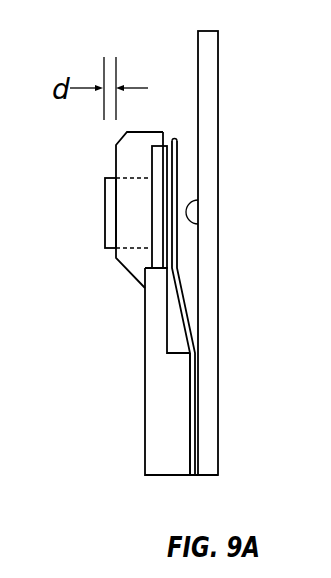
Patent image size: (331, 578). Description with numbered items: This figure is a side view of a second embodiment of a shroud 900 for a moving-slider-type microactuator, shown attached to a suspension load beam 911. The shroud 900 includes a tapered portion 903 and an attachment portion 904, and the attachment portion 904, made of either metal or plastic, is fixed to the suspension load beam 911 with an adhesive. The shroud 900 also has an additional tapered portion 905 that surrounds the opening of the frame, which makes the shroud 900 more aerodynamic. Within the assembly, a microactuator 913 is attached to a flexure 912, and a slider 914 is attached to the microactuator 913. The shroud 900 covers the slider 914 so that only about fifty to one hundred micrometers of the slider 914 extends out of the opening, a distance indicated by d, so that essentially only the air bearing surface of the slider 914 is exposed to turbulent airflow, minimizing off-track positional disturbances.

The suspension load beam 911 is at (207, 62).
The microactuator 913 is at (158, 170).
The slider 914 is at (105, 226).
The additional tapered portion 905 is at (114, 259).
The flexure 912 is at (173, 290).
The shroud 900 is at (163, 331).
The tapered portion 903 is at (147, 377).
The attachment portion 904 is at (177, 413).